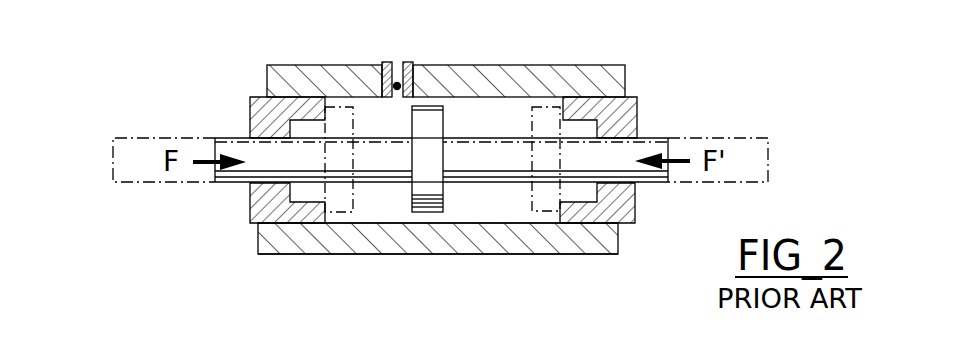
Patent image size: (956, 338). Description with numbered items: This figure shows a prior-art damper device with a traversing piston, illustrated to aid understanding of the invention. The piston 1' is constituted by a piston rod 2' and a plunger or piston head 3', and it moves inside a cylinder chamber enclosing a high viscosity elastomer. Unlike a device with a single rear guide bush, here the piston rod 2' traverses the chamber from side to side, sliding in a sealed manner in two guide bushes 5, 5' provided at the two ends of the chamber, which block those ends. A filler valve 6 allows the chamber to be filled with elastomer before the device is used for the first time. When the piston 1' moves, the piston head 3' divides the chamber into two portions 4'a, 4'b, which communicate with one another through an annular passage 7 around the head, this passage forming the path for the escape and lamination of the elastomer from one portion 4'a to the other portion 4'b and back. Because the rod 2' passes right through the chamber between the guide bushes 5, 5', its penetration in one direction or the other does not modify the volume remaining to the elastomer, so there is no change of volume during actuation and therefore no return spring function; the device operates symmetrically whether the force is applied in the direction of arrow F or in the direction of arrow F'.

The piston 1' is at (441, 201).
The piston rod 2' is at (440, 159).
The piston head 3' is at (450, 113).
The chamber portion 4'a is at (529, 258).
The chamber portion 4'b is at (349, 269).
The guide bush 5 is at (260, 172).
The guide bush 5' is at (623, 183).
The filler valve 6 is at (398, 62).
The annular passage 7 is at (425, 218).